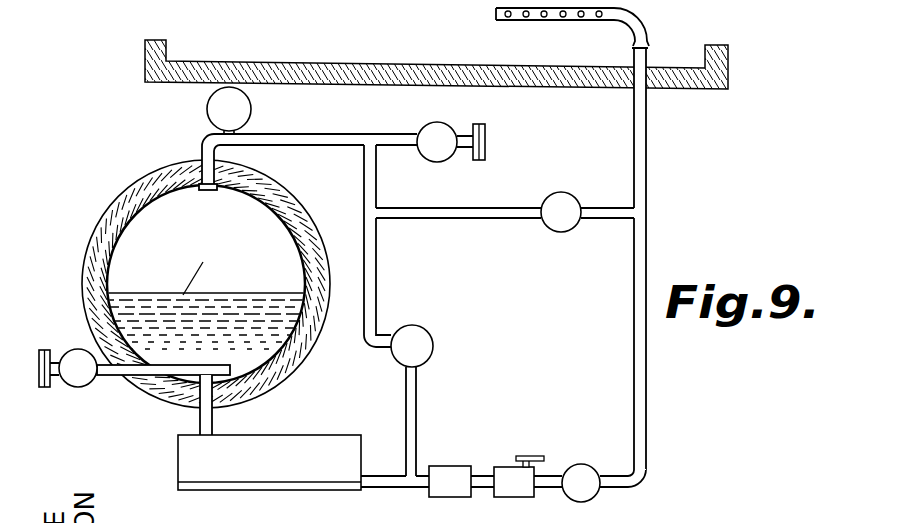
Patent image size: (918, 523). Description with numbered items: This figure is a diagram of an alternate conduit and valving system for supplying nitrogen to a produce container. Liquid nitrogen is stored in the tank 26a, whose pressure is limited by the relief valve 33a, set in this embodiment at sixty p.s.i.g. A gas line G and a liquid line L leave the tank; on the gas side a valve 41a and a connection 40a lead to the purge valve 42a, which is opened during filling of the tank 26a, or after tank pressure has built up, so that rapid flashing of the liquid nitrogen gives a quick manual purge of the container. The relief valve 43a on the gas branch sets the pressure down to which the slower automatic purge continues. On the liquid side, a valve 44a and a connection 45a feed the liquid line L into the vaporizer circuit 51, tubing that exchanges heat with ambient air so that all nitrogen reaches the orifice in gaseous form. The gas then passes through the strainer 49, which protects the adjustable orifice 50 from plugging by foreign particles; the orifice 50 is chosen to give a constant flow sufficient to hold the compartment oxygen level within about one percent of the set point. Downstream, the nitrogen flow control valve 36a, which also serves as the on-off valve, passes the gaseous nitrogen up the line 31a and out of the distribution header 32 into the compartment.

The tank 26a is at (143, 210).
The relief valve 33a is at (207, 108).
The distribution header 32 is at (536, 25).
The line 31a is at (640, 143).
The valve 41a is at (418, 127).
The pipe connection 40a is at (486, 137).
The purge valve 42a is at (554, 192).
The valve 43a is at (432, 340).
The gas line G is at (377, 285).
The pipe connection 45a is at (42, 387).
The valve 44a is at (90, 387).
The liquid line L is at (178, 462).
The vaporizer circuit 51 is at (287, 438).
The strainer 49 is at (449, 468).
The adjustable orifice 50 is at (506, 470).
The nitrogen flow control valve 36a is at (578, 465).